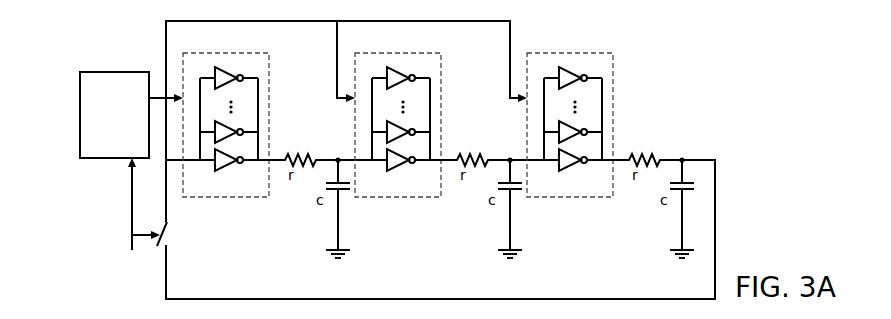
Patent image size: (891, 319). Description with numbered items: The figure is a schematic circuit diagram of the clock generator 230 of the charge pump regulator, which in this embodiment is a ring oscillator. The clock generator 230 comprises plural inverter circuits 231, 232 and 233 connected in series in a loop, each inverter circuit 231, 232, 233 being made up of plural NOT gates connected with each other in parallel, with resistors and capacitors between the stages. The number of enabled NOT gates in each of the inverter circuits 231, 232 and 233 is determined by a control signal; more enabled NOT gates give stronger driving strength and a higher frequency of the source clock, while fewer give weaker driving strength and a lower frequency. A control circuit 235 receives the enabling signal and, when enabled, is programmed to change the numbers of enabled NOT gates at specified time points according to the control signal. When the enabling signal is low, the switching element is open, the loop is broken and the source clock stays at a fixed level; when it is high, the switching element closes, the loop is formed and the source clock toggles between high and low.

The clock generator 230 is at (647, 53).
The inverter circuit 231 is at (216, 188).
The inverter circuit 232 is at (388, 192).
The inverter circuit 233 is at (560, 192).
The control circuit 235 is at (118, 152).